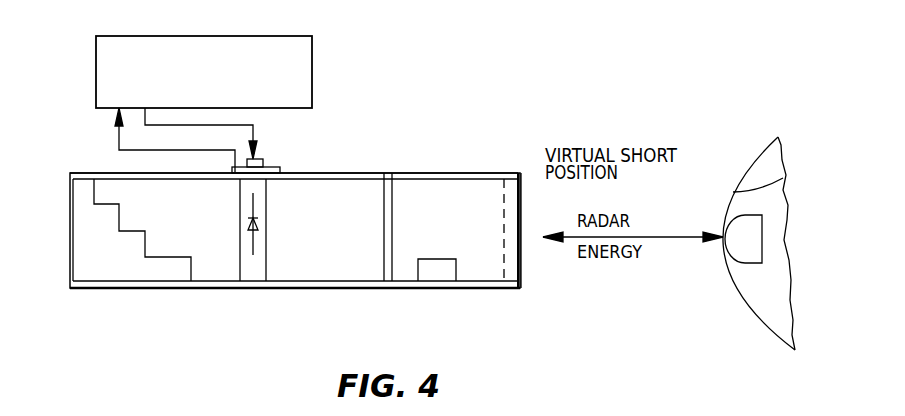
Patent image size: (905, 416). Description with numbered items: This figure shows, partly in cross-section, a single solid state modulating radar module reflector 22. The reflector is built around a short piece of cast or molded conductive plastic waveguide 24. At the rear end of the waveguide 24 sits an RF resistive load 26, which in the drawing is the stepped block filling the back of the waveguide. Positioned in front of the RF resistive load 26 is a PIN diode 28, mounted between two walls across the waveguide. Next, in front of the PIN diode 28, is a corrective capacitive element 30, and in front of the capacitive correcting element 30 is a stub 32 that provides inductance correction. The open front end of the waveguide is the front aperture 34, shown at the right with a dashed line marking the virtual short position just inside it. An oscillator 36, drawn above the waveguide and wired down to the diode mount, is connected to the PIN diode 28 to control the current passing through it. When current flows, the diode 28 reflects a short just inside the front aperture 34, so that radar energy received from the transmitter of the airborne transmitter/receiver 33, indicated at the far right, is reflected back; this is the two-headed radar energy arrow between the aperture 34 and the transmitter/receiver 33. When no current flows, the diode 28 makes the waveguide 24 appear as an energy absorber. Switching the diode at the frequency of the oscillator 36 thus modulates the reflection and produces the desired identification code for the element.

The solid state modulating radar module reflector 22 is at (441, 83).
The waveguide 24 is at (390, 165).
The RF resistive load 26 is at (80, 250).
The PIN diode 28 is at (258, 228).
The corrective capacitive element 30 is at (386, 277).
The stub 32 is at (446, 275).
The airborne transmitter/receiver 33 is at (740, 212).
The front aperture 34 is at (521, 263).
The oscillator 36 is at (215, 35).